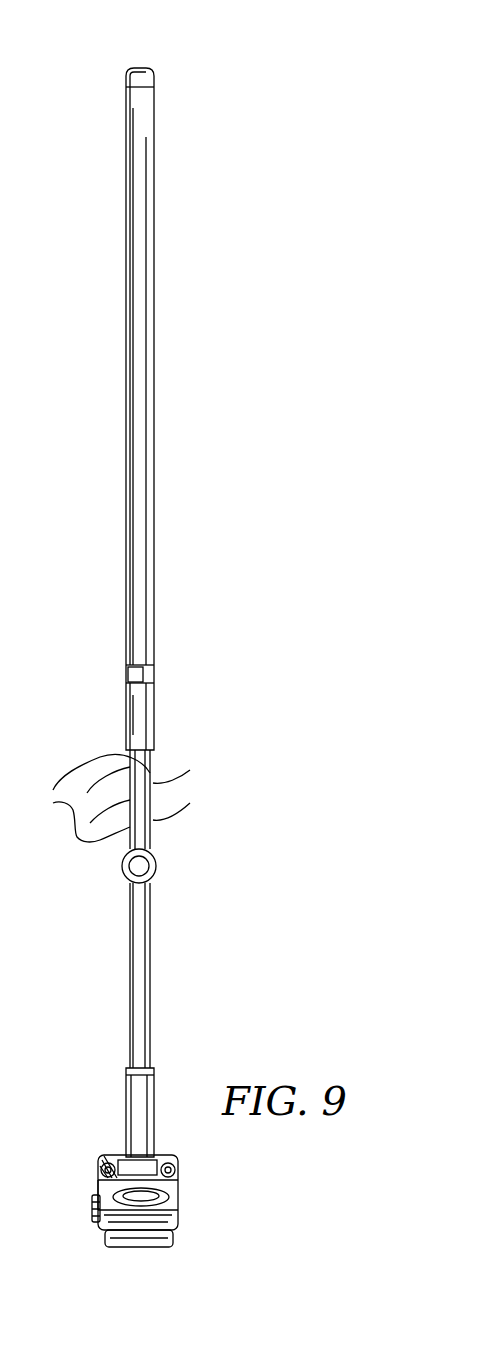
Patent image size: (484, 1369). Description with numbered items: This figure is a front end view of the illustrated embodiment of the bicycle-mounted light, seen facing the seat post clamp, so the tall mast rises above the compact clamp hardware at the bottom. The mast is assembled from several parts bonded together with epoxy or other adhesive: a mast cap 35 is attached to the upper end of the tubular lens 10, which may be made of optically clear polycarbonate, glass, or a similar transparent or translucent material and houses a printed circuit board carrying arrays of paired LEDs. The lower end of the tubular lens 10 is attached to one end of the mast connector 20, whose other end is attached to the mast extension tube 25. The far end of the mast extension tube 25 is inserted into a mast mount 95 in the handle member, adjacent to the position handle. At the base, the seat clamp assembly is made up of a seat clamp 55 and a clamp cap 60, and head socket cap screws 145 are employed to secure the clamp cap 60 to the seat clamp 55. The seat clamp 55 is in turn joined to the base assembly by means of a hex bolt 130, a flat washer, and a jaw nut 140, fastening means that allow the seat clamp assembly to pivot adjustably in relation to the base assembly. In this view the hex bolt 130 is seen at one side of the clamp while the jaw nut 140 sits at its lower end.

The tubular lens 10 is at (126, 340).
The mast cap 35 is at (155, 77).
The mast connector 20 is at (155, 718).
The mast extension tube 25 is at (109, 909).
The mast mount 95 is at (155, 1106).
The hex bolt 130 is at (178, 1200).
The head socket cap screws 145 is at (105, 1160).
The clamp cap 60 is at (98, 1185).
The seat clamp 55 is at (92, 1205).
The jaw nut 140 is at (98, 1224).